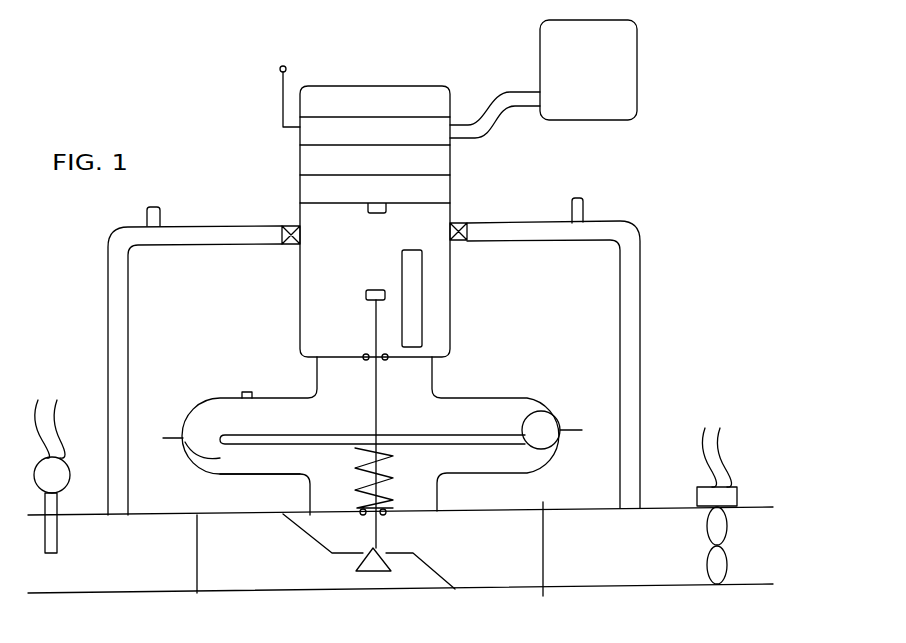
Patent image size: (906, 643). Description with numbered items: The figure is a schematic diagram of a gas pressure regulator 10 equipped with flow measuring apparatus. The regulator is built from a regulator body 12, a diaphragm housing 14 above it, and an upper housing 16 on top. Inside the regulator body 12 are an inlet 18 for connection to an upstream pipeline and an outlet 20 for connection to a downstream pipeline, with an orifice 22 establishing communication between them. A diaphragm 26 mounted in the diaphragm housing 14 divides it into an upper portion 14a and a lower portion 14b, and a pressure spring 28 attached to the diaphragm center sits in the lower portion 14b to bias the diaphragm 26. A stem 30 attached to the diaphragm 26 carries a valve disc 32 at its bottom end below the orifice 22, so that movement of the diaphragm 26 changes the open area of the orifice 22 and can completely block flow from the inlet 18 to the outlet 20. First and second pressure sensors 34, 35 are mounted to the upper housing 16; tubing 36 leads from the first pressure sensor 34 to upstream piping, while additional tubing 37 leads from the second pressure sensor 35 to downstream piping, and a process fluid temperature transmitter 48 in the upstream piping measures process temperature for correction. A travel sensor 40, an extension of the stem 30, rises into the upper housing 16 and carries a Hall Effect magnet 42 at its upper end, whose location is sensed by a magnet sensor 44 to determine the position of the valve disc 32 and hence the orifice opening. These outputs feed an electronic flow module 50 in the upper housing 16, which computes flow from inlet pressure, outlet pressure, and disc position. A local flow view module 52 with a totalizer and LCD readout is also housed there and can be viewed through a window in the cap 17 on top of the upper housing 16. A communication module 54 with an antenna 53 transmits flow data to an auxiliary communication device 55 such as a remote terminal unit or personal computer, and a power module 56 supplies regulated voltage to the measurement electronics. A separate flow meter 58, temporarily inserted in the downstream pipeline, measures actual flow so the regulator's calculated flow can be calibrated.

The gas pressure regulator 10 is at (500, 366).
The regulator body 12 is at (512, 508).
The diaphragm housing 14 is at (203, 418).
The upper portion of the diaphragm housing 14a is at (205, 426).
The lower portion of the diaphragm housing 14b is at (220, 470).
The upper housing 16 is at (300, 288).
The cap 17 is at (356, 86).
The inlet 18 is at (197, 571).
The outlet 20 is at (543, 553).
The orifice 22 is at (383, 548).
The diaphragm 26 is at (478, 433).
The pressure spring 28 is at (356, 452).
The stem 30 is at (372, 530).
The valve disc 32 is at (356, 572).
The first pressure sensor 34 is at (290, 226).
The second pressure sensor 35 is at (462, 240).
The tubing 36 is at (108, 289).
The additional tubing 37 is at (640, 320).
The travel sensor 40 is at (376, 420).
The Hall Effect magnet 42 is at (376, 290).
The magnet sensor 44 is at (416, 300).
The process fluid temperature transmitter 48 is at (66, 477).
The electronic flow module 50 is at (450, 187).
The local flow view module 52 is at (450, 152).
The antenna 53 is at (283, 100).
The communication module 54 is at (306, 132).
The auxiliary communication device 55 is at (612, 120).
The power module 56 is at (410, 92).
The flow meter 58 is at (730, 492).